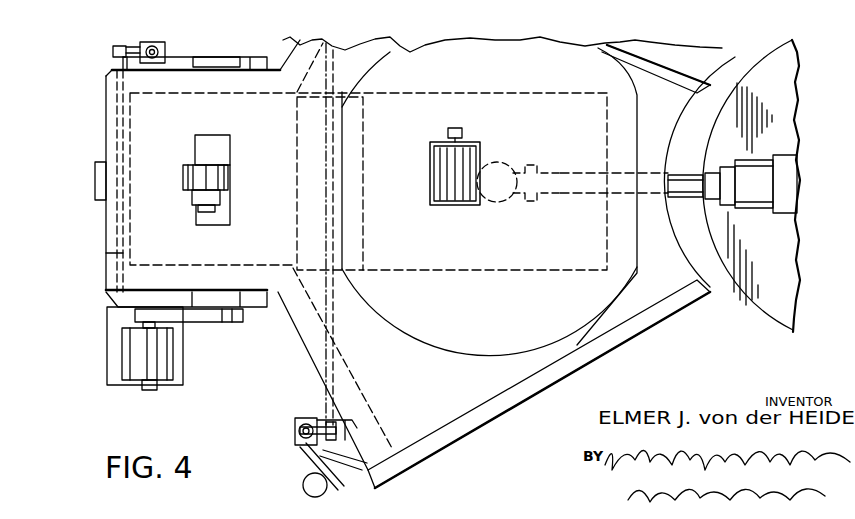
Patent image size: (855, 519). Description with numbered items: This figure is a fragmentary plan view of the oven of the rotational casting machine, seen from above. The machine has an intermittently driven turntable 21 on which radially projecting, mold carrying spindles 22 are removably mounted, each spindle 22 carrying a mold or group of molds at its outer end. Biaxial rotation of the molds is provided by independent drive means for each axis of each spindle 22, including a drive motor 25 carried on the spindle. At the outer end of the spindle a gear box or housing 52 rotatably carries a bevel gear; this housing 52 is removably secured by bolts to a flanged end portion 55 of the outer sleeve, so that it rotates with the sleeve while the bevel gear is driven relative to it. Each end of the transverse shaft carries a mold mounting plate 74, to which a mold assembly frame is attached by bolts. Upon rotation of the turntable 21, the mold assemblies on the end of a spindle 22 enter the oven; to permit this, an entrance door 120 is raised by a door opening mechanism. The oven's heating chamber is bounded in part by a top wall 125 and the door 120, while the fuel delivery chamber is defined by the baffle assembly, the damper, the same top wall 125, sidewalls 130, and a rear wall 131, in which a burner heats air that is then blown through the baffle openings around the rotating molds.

The turntable 21 is at (762, 302).
The spindle 22 is at (688, 197).
The second drive motor 25 is at (748, 208).
The gear box 52 is at (510, 199).
The flanged end portion 55 is at (540, 172).
The mold mounting plate 74 is at (500, 163).
The door 120 is at (497, 410).
The top wall 125 is at (160, 122).
The sidewalls 130 is at (252, 80).
The rear wall 131 is at (106, 250).